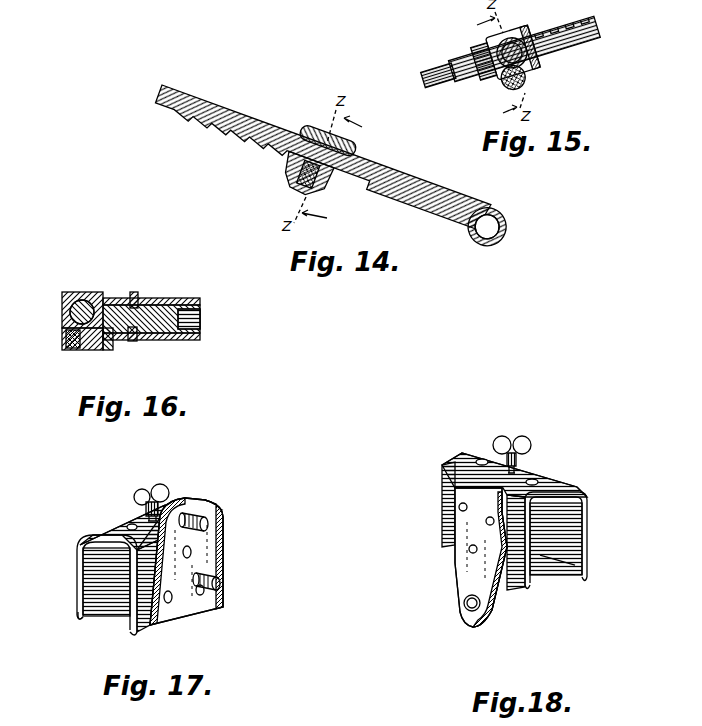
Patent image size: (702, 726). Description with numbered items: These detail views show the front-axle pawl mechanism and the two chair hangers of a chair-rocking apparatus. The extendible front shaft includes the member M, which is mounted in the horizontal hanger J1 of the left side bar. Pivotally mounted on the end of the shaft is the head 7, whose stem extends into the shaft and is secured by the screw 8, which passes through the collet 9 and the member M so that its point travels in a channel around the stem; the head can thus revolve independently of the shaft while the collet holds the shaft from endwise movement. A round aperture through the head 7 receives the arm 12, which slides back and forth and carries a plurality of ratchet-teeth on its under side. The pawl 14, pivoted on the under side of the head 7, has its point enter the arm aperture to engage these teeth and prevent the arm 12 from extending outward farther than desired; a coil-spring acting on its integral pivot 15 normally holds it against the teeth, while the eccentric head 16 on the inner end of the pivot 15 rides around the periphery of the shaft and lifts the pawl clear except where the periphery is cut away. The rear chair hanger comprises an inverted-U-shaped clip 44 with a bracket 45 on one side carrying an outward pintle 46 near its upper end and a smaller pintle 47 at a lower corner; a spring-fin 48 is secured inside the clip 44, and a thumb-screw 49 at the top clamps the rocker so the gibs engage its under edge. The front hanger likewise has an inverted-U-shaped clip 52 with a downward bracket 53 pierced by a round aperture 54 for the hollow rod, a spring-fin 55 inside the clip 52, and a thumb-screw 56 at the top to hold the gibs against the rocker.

In FIG. 14, the head 7 is at (318, 137).
In FIG. 15, the head 7 is at (514, 34).
In FIG. 16, the head 7 is at (62, 311).
In FIG. 16, the screw 8 is at (135, 293).
In FIG. 16, the collet 9 is at (133, 341).
In FIG. 14, the arm 12 is at (413, 192).
In FIG. 15, the arm 12 is at (595, 28).
In FIG. 16, the arm 12 is at (80, 304).
In FIG. 14, the pawl 14 is at (293, 178).
In FIG. 16, the pawl 14 is at (62, 331).
In FIG. 14, the pivot 15 is at (316, 180).
In FIG. 15, the pivot 15 is at (502, 89).
In FIG. 16, the pivot 15 is at (64, 342).
In FIG. 15, the eccentric head 16 is at (528, 78).
In FIG. 16, the eccentric head 16 is at (110, 350).
In FIG. 15, the shaft member M is at (531, 34).
In FIG. 16, the shaft member M is at (115, 298).
In FIG. 16, the horizontal hanger J1 is at (182, 292).
In FIG. 17, the inverted-U-shaped clip 44 is at (222, 552).
In FIG. 17, the bracket 45 is at (187, 600).
In FIG. 17, the pintle 46 is at (204, 516).
In FIG. 17, the pintle 47 is at (220, 585).
In FIG. 17, the spring-fin 48 is at (117, 619).
In FIG. 17, the thumb-screw 49 is at (135, 498).
In FIG. 18, the inverted-U-shaped clip 52 is at (442, 499).
In FIG. 18, the bracket 53 is at (455, 569).
In FIG. 18, the round aperture 54 is at (482, 603).
In FIG. 18, the spring-fin 55 is at (550, 563).
In FIG. 18, the thumb-screw 56 is at (514, 437).